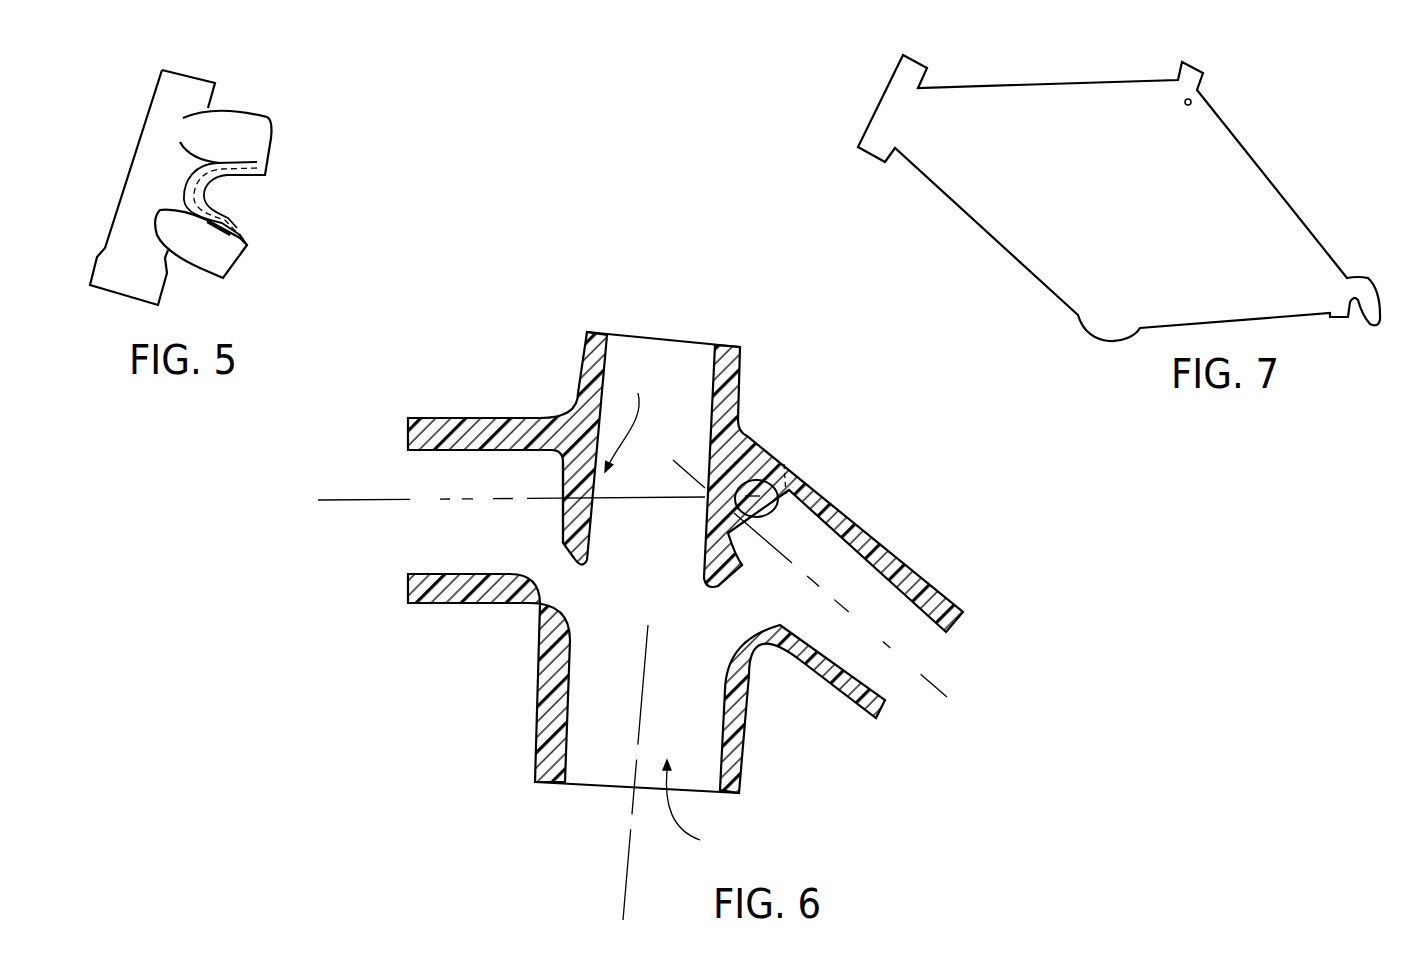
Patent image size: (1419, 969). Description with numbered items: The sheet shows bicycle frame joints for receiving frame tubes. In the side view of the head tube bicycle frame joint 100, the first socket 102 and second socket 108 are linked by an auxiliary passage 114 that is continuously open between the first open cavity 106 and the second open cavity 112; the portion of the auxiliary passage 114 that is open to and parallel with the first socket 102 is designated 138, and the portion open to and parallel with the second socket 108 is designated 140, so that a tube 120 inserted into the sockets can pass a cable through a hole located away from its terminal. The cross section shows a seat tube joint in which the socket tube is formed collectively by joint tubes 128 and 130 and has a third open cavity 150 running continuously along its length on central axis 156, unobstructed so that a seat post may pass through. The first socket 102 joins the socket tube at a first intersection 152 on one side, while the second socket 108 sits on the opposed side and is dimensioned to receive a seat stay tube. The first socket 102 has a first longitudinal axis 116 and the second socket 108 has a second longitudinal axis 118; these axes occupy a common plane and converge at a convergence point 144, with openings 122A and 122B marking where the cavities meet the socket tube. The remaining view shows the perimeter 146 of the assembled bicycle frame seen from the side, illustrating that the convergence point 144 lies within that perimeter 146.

In FIG. 5, the bicycle frame joint 100 is at (287, 80).
In FIG. 6, the bicycle frame joint 100 is at (732, 302).
In FIG. 5, the first socket 102 is at (213, 108).
In FIG. 6, the first socket 102 is at (485, 418).
In FIG. 6, the first open cavity 106 is at (464, 545).
In FIG. 5, the second socket 108 is at (207, 273).
In FIG. 6, the second socket 108 is at (837, 510).
In FIG. 6, the second open cavity 112 is at (787, 619).
In FIG. 5, the auxiliary passage 114 is at (187, 175).
In FIG. 6, the first longitudinal axis 116 is at (353, 500).
In FIG. 6, the second longitudinal axis 118 is at (913, 610).
In FIG. 5, the tube 120 is at (213, 190).
In FIG. 6, the first port opening 122A is at (563, 511).
In FIG. 6, the second port opening 122B is at (791, 450).
In FIG. 6, the joint tube 128 is at (737, 383).
In FIG. 6, the joint tube 130 is at (537, 712).
In FIG. 5, the auxiliary passage portion 138 is at (240, 155).
In FIG. 5, the auxiliary passage portion 140 is at (243, 248).
In FIG. 6, the convergence point 144 is at (703, 518).
In FIG. 7, the convergence point 144 is at (1185, 105).
In FIG. 7, the perimeter 146 is at (1252, 157).
In FIG. 6, the third open cavity 150 is at (702, 808).
In FIG. 6, the first intersection 152 is at (633, 418).
In FIG. 6, the central axis 156 is at (622, 900).